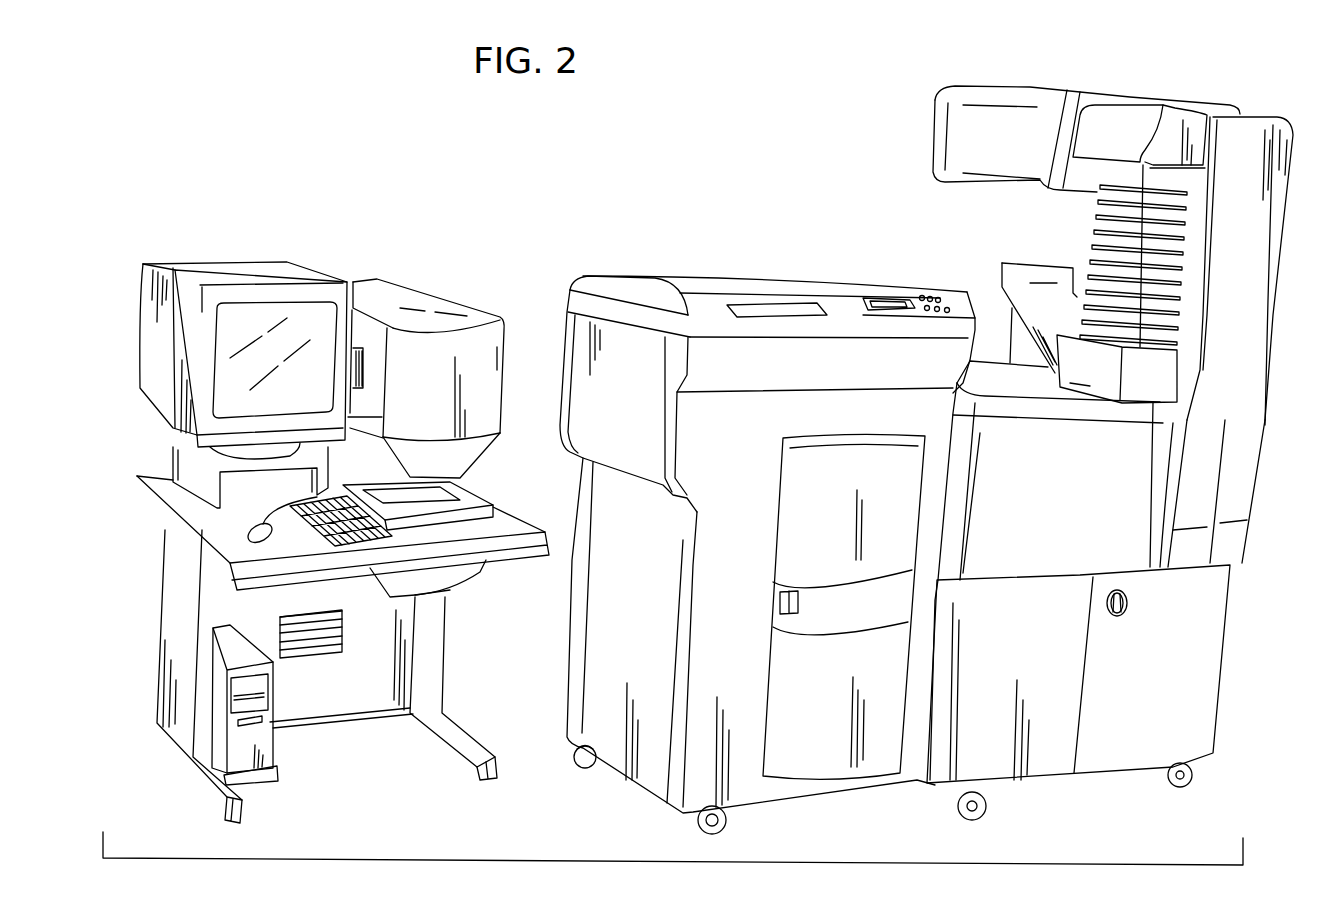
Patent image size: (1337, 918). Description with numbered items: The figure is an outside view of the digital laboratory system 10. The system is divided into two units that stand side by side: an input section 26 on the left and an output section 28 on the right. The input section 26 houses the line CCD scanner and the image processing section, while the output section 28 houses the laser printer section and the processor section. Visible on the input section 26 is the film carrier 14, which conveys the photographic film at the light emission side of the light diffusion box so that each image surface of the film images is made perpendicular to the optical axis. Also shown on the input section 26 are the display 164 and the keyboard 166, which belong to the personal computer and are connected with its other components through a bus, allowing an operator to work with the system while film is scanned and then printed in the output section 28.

The digital laboratory system 10 is at (448, 176).
The input section 26 is at (228, 229).
The display 164 is at (218, 347).
The film carrier 14 is at (470, 498).
The keyboard 166 is at (457, 593).
The output section 28 is at (730, 192).